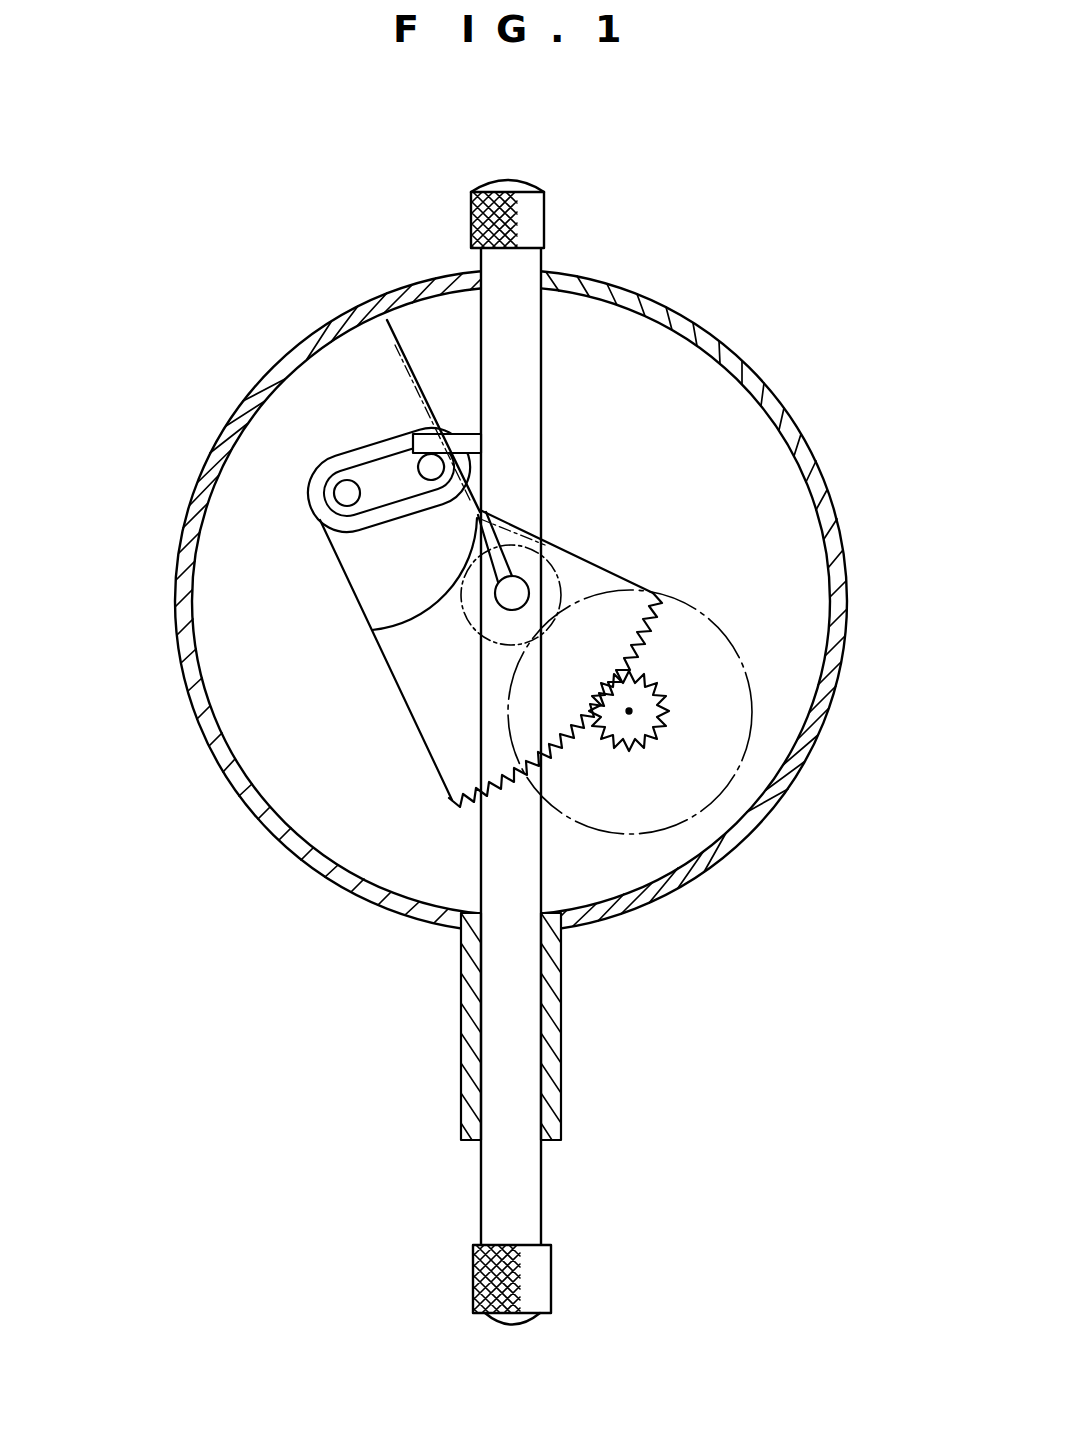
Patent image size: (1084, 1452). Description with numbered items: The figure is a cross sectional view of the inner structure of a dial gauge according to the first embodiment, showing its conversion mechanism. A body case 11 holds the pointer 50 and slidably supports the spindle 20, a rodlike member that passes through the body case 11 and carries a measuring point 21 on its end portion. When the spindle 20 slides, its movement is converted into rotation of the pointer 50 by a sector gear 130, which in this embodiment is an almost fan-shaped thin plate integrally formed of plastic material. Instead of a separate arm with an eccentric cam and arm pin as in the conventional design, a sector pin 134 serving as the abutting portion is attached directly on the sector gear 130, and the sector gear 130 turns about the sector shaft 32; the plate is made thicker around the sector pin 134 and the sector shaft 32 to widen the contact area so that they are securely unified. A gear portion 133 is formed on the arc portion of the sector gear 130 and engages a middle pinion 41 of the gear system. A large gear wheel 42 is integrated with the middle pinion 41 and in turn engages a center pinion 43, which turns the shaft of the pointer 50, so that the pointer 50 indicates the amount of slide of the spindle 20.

The body case 11 is at (780, 402).
The spindle 20 is at (520, 1045).
The measuring point 21 is at (540, 1283).
The sector shaft 32 is at (345, 493).
The middle pinion 41 is at (633, 723).
The large gear wheel 42 is at (722, 748).
The center pinion 43 is at (560, 570).
The pointer 50 is at (415, 392).
The sector gear 130 is at (413, 672).
The gear portion 133 is at (465, 788).
The sector pin 134 is at (425, 465).